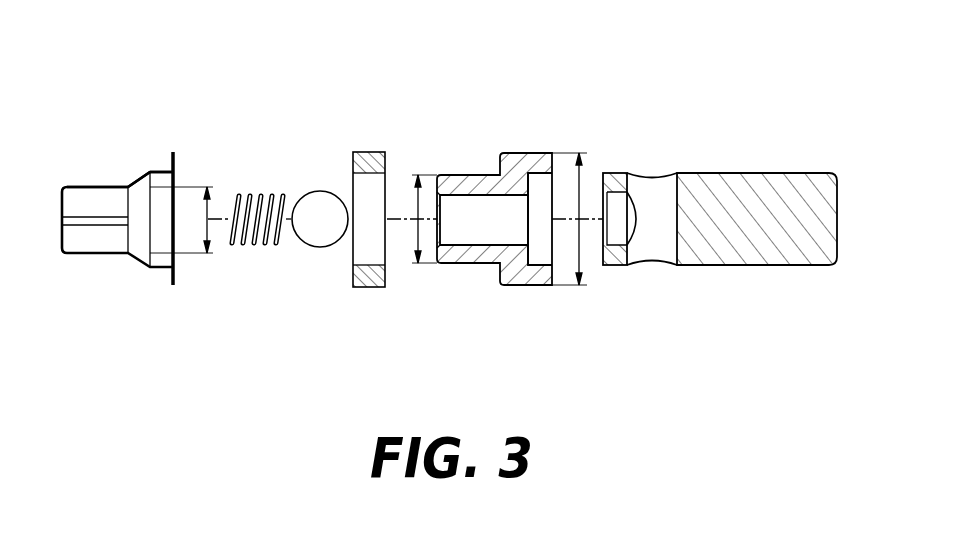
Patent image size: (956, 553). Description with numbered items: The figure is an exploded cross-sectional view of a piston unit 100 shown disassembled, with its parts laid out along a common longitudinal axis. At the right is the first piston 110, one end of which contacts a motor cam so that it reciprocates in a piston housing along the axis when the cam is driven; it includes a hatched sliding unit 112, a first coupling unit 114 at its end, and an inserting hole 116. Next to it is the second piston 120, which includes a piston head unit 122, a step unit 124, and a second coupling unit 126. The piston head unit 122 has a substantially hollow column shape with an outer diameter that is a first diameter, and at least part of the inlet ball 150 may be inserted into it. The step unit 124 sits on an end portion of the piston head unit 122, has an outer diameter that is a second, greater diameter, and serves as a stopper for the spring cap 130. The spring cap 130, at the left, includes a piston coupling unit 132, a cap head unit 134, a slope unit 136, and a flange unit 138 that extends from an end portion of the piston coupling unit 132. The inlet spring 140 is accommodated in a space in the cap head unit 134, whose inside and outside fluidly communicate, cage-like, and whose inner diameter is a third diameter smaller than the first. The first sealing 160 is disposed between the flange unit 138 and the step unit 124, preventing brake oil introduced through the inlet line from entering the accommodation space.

The piston unit 100 is at (115, 24).
The first piston 110 is at (713, 199).
The sliding unit 112 is at (740, 266).
The first coupling unit 114 is at (615, 178).
The inserting hole 116 is at (660, 183).
The second piston 120 is at (470, 306).
The piston head unit 122 is at (475, 176).
The step unit 124 is at (515, 157).
The second coupling unit 126 is at (552, 264).
The spring cap 130 is at (120, 286).
The piston coupling unit 132 is at (167, 172).
The cap head unit 134 is at (90, 185).
The slope unit 136 is at (137, 180).
The flange unit 138 is at (175, 153).
The inlet spring 140 is at (262, 180).
The inlet ball 150 is at (314, 262).
The first sealing 160 is at (372, 136).